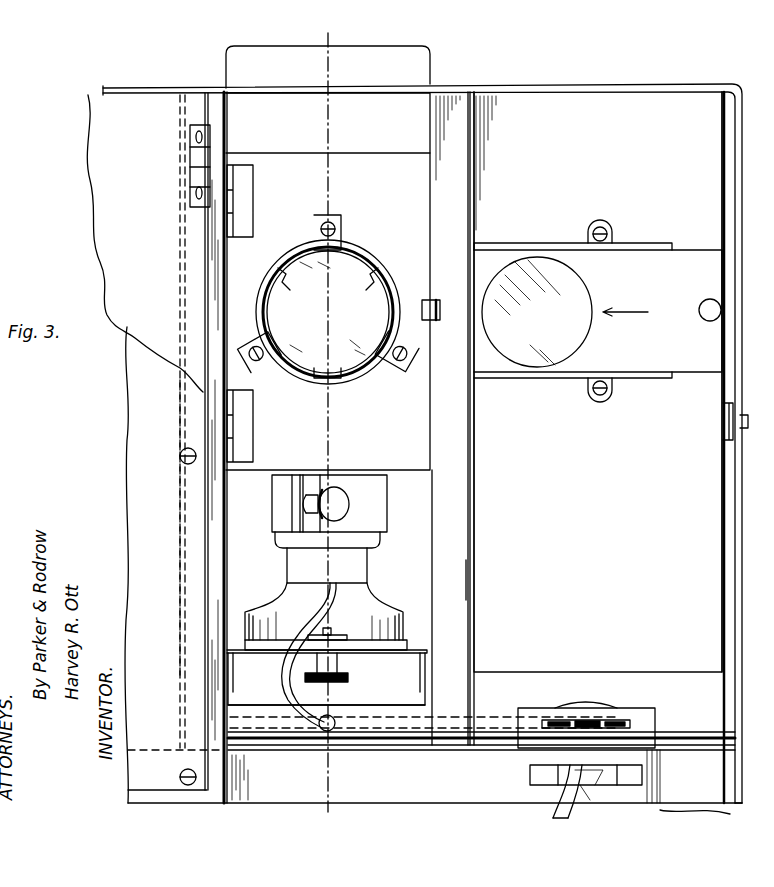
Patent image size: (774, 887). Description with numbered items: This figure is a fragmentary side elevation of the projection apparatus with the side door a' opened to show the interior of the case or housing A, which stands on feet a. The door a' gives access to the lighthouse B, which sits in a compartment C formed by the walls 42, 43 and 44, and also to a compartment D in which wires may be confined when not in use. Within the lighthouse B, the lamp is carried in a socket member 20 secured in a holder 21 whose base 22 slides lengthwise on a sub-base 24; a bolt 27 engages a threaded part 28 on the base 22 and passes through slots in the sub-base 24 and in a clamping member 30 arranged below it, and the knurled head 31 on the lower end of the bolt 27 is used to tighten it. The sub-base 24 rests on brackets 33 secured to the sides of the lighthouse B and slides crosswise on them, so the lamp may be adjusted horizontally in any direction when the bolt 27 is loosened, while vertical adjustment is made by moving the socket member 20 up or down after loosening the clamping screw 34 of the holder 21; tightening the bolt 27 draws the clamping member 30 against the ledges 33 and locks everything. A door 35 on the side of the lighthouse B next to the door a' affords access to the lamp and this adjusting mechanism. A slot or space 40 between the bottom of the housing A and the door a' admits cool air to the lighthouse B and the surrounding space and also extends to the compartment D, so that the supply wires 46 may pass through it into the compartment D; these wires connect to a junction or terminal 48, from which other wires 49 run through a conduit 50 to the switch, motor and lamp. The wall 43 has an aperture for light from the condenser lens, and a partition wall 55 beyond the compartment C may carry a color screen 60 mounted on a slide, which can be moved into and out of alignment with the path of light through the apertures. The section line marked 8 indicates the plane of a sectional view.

The case or housing A is at (628, 74).
The door a' is at (154, 448).
The feet a is at (747, 749).
The lighthouse B is at (432, 454).
The compartment C is at (453, 418).
The compartment D is at (611, 382).
The section line 8 is at (316, 36).
The socket member 20 is at (372, 546).
The holder 21 is at (341, 504).
The base 22 is at (395, 625).
The sub-base 24 is at (420, 648).
The bolt 27 is at (338, 662).
The threaded part 28 is at (340, 634).
The clamping member 30 is at (287, 665).
The knurled head 31 is at (338, 682).
The brackets 33 is at (240, 655).
The clamping screw 34 is at (340, 495).
The door 35 is at (328, 293).
The slot or space 40 is at (481, 766).
The wall 42 is at (181, 530).
The wall 43 is at (462, 578).
The wall 44 is at (477, 541).
The wires or conductors 46 is at (530, 776).
The junction or terminal 48 is at (658, 726).
The wires or conductors 49 is at (314, 595).
The conduit 50 is at (425, 717).
The partition wall 55 is at (598, 332).
The color screen 60 is at (537, 312).